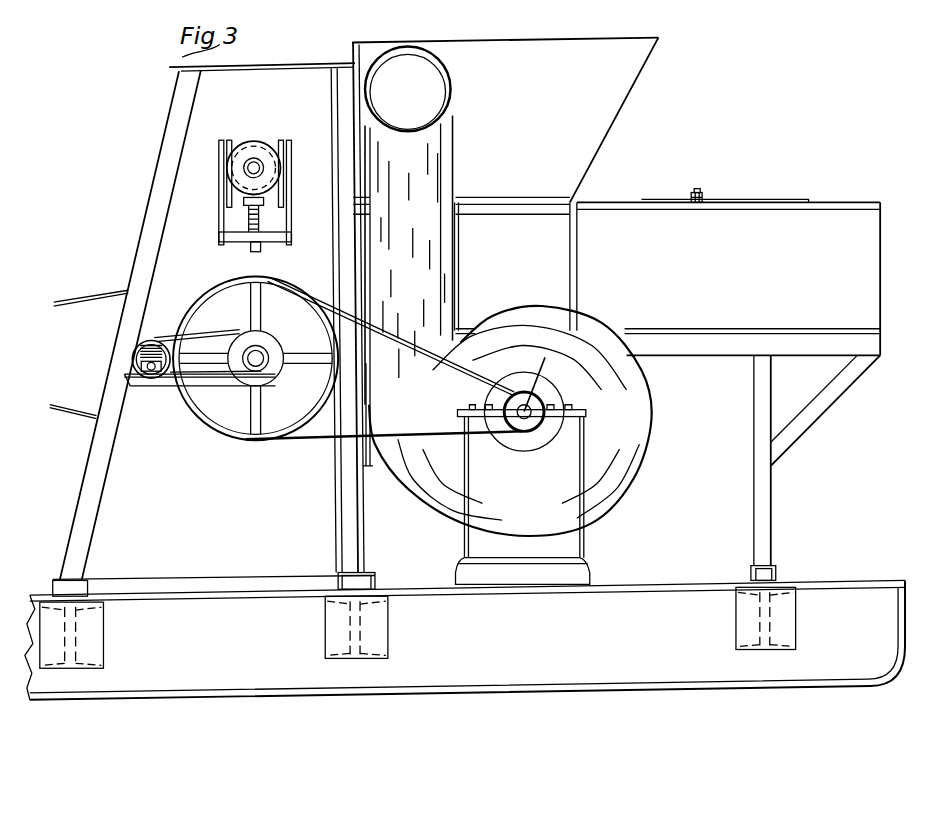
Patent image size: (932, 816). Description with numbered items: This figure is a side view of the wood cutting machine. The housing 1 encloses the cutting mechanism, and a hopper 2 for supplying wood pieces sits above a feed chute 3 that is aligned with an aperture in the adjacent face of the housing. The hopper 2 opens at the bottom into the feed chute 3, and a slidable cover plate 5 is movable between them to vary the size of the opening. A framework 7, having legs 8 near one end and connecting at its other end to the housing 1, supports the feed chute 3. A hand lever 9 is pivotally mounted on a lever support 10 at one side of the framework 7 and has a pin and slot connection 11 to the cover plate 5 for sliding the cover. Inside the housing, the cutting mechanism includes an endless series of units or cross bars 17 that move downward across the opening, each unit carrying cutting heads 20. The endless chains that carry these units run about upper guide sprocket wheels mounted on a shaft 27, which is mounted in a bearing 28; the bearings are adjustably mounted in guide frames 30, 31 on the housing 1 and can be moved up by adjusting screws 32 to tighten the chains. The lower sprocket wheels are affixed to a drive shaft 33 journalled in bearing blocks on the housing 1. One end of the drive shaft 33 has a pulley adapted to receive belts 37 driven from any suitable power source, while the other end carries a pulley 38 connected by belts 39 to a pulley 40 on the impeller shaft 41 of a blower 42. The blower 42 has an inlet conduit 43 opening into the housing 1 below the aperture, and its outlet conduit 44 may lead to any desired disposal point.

The housing 1 is at (149, 174).
The hopper 2 is at (567, 115).
The feed chute 3 is at (517, 285).
The slidable cover plate 5 is at (664, 198).
The framework 7 is at (715, 358).
The legs 8 is at (757, 476).
The hand lever 9 is at (702, 192).
The lever support 10 is at (704, 195).
The pin and slot connection 11 is at (696, 184).
The units or cross bars 17 is at (200, 178).
The cutting heads 20 is at (261, 118).
The shaft 27 is at (262, 152).
The bearing 28 is at (254, 162).
The guide frame 30 is at (220, 236).
The guide frame 31 is at (285, 232).
The adjusting screws 32 is at (255, 216).
The drive shaft 33 is at (258, 354).
The belts 37 is at (66, 306).
The pulley 38 is at (251, 358).
The belts 39 is at (384, 370).
The pulley 40 is at (522, 440).
The impeller shaft 41 is at (537, 381).
The blower 42 is at (550, 398).
The inlet conduit 43 is at (372, 455).
The outlet conduit 44 is at (440, 100).